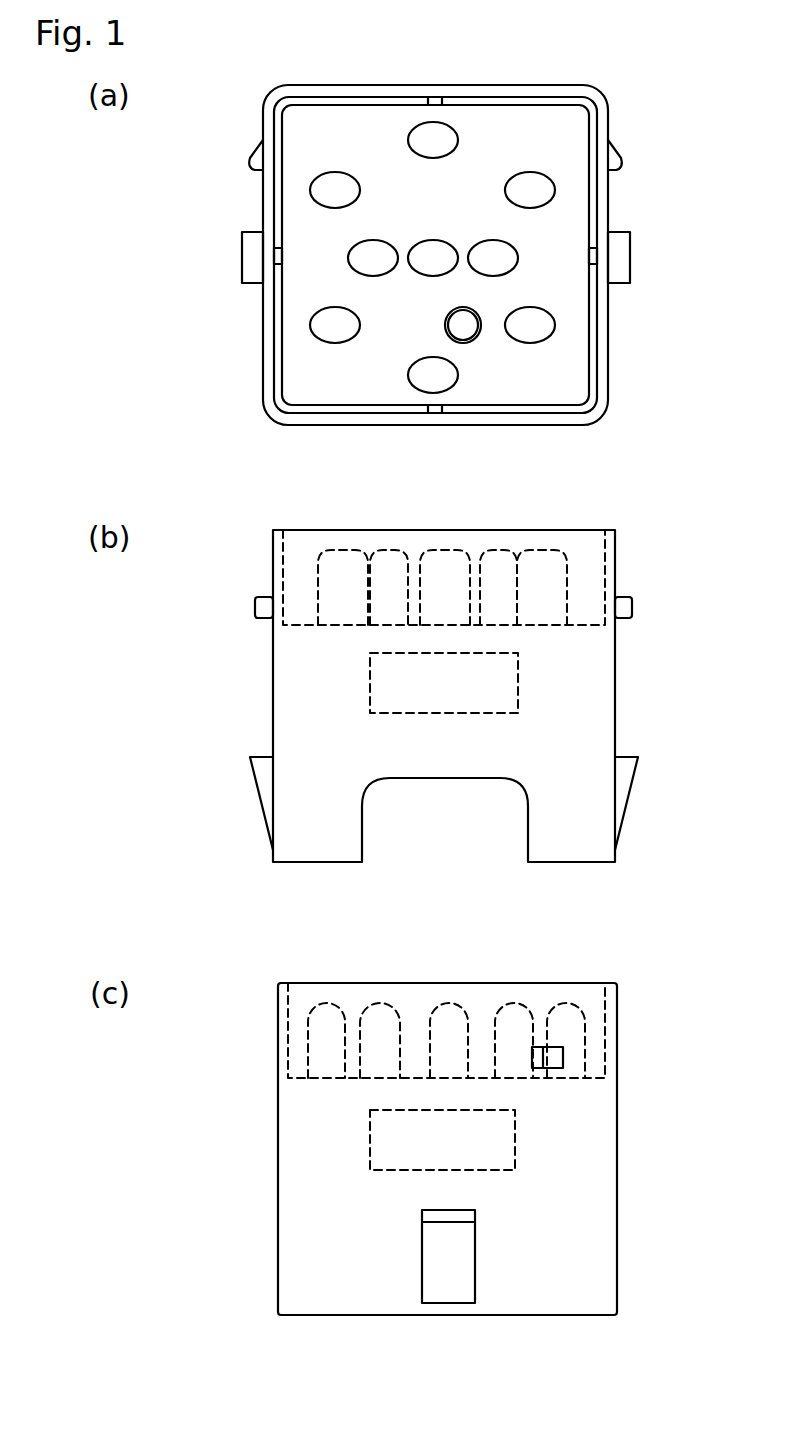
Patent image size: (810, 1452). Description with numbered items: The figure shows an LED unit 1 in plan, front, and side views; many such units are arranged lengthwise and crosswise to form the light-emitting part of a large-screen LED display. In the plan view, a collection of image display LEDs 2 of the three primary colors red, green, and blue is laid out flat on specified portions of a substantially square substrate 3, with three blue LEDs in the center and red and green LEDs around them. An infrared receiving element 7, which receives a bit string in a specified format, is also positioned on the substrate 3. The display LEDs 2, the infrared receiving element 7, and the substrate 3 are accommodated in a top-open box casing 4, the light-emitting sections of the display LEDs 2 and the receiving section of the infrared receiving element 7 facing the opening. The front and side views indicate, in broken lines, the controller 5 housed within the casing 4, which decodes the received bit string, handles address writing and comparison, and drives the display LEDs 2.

The LED unit 1 is at (614, 106).
The display LED 2 is at (520, 257).
The substrate 3 is at (555, 375).
The casing 4 is at (261, 198).
The controller 5 is at (475, 690).
The infrared receiving element 7 is at (466, 321).